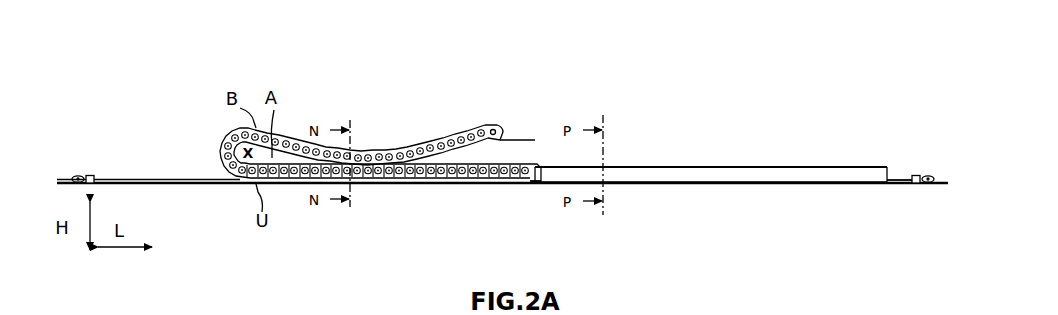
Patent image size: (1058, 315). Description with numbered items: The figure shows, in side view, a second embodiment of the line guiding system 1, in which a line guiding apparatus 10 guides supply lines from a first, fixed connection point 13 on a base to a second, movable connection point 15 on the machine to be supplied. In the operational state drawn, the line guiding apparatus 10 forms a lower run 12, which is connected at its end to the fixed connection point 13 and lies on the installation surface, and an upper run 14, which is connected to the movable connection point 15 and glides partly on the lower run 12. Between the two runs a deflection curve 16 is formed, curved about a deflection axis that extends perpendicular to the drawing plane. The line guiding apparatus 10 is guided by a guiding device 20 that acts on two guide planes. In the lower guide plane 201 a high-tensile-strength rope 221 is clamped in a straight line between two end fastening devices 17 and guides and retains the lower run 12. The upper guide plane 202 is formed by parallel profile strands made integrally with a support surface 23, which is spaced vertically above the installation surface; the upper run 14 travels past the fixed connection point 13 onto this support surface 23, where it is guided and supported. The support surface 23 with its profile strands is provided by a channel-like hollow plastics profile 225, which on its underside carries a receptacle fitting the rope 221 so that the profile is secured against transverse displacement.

The line guiding system 1 is at (137, 47).
The line guiding apparatus 10 is at (374, 126).
The lower run 12 is at (534, 166).
The first connection point 13 is at (531, 184).
The upper run 14 is at (432, 146).
The second connection point 15 is at (492, 120).
The deflection curve 16 is at (226, 140).
The fastening device 17 is at (88, 175).
The guiding device 20 is at (490, 163).
The support surface 23 is at (711, 161).
The lower guide plane 201 is at (895, 186).
The upper guide plane 202 is at (777, 164).
The rope 221 is at (174, 179).
The plastics profile 225 is at (800, 185).